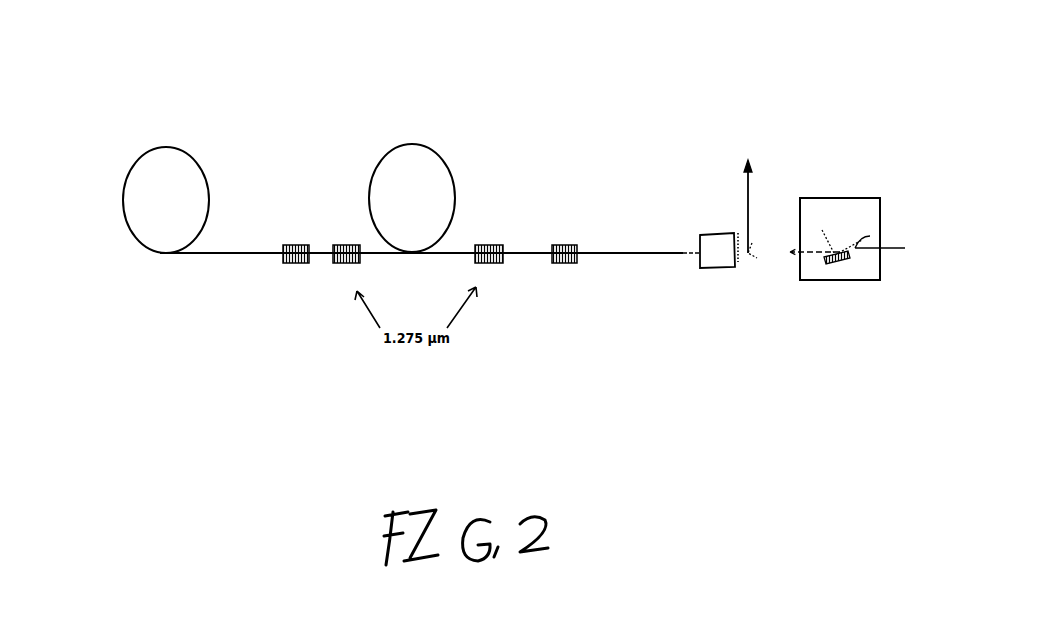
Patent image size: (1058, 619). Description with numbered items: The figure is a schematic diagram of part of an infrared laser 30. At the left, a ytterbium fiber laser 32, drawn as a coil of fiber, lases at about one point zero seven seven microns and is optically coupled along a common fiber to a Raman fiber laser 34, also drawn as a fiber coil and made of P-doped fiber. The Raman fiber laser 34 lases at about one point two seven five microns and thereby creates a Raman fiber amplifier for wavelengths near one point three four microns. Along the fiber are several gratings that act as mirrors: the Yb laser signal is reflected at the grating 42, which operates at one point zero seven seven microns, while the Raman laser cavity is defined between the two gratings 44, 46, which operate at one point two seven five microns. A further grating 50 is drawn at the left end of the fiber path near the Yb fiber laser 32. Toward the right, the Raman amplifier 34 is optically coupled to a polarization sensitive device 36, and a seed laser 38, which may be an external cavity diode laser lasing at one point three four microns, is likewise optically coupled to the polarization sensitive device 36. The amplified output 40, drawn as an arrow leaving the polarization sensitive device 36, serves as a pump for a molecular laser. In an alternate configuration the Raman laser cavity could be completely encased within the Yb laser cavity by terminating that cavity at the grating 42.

The infrared laser 30 is at (600, 53).
The Yb fiber laser 32 is at (125, 187).
The Raman fiber laser 34 is at (456, 181).
The polarization sensitive device 36 is at (719, 214).
The seed laser 38 is at (866, 283).
The amplified output 40 is at (749, 188).
The 1.077 micron grating 42 is at (557, 242).
The 1.275 micron grating 44 is at (360, 260).
The 1.275 micron grating 46 is at (477, 262).
The 99.9% fiber Bragg grating at 1.34 um 50 is at (283, 264).